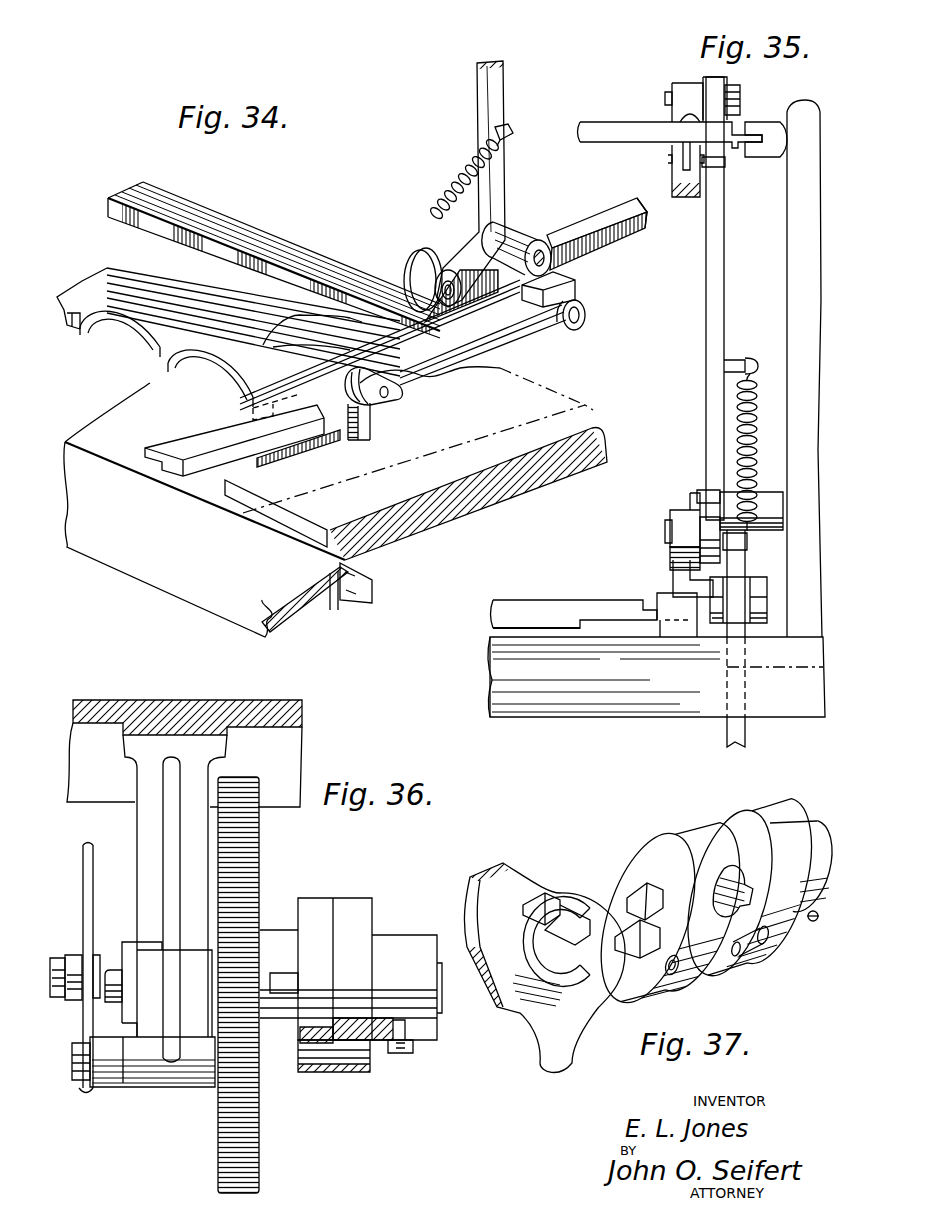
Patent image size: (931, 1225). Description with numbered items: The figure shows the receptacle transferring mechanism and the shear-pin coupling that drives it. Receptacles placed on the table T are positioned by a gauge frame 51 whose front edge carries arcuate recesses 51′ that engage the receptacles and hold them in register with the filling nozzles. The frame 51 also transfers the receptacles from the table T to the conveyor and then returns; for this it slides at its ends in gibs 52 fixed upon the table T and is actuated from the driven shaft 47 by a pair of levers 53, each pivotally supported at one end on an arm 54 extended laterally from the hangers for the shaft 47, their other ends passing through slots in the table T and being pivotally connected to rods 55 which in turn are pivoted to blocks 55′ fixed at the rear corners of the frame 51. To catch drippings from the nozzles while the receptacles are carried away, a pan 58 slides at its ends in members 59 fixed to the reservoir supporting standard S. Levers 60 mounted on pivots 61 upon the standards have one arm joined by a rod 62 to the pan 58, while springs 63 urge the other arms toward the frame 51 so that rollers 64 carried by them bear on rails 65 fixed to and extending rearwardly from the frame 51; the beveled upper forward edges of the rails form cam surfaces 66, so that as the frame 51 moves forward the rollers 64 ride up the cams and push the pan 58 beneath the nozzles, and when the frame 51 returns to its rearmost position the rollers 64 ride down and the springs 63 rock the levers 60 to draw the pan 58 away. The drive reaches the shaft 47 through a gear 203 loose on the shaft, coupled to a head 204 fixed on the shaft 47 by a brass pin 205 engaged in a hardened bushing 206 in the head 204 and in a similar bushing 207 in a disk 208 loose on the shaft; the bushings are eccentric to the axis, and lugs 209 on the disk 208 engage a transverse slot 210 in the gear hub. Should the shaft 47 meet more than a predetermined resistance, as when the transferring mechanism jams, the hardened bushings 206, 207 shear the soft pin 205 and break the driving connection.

In FIG. 36, the driven shaft 47 is at (117, 963).
In FIG. 34, the frame 51 is at (328, 262).
In FIG. 35, the frame 51 is at (550, 613).
In FIG. 34, the arcuate recesses 51′ is at (140, 380).
In FIG. 34, the gibs 52 is at (178, 438).
In FIG. 35, the gibs 52 is at (660, 607).
In FIG. 34, the levers 53 is at (368, 583).
In FIG. 35, the levers 53 is at (748, 733).
In FIG. 36, the levers 53 is at (83, 896).
In FIG. 36, the arm 54 is at (113, 1073).
In FIG. 34, the rods 55 is at (500, 340).
In FIG. 35, the rods 55 is at (767, 603).
In FIG. 34, the blocks 55′ is at (578, 292).
In FIG. 35, the blocks 55′ is at (703, 577).
In FIG. 35, the pan 58 is at (623, 127).
In FIG. 35, the members 59 is at (753, 137).
In FIG. 34, the levers 60 is at (500, 93).
In FIG. 35, the levers 60 is at (707, 310).
In FIG. 34, the pivot 61 is at (517, 243).
In FIG. 35, the pivot 61 is at (765, 497).
In FIG. 35, the rod 62 is at (677, 120).
In FIG. 34, the springs 63 is at (448, 190).
In FIG. 35, the springs 63 is at (757, 428).
In FIG. 34, the rollers 64 is at (418, 257).
In FIG. 35, the rollers 64 is at (670, 547).
In FIG. 34, the rails 65 is at (580, 226).
In FIG. 34, the cam surfaces 66 is at (440, 300).
In FIG. 36, the gear 203 is at (259, 1146).
In FIG. 37, the gear 203 is at (520, 1043).
In FIG. 36, the head 204 is at (357, 915).
In FIG. 37, the head 204 is at (790, 814).
In FIG. 36, the pin 205 is at (348, 1062).
In FIG. 37, the pin 205 is at (745, 953).
In FIG. 36, the bushing 206 is at (378, 1063).
In FIG. 37, the bushing 206 is at (780, 967).
In FIG. 36, the bushing 207 is at (300, 1060).
In FIG. 37, the bushing 207 is at (670, 978).
In FIG. 36, the disk 208 is at (320, 912).
In FIG. 37, the disk 208 is at (622, 843).
In FIG. 36, the lugs 209 is at (282, 975).
In FIG. 37, the lugs 209 is at (647, 897).
In FIG. 37, the transverse slot 210 is at (530, 907).
In FIG. 35, the reservoir supporting standard S is at (787, 283).
In FIG. 34, the table T is at (540, 487).
In FIG. 35, the table T is at (656, 678).
In FIG. 36, the table T is at (302, 740).